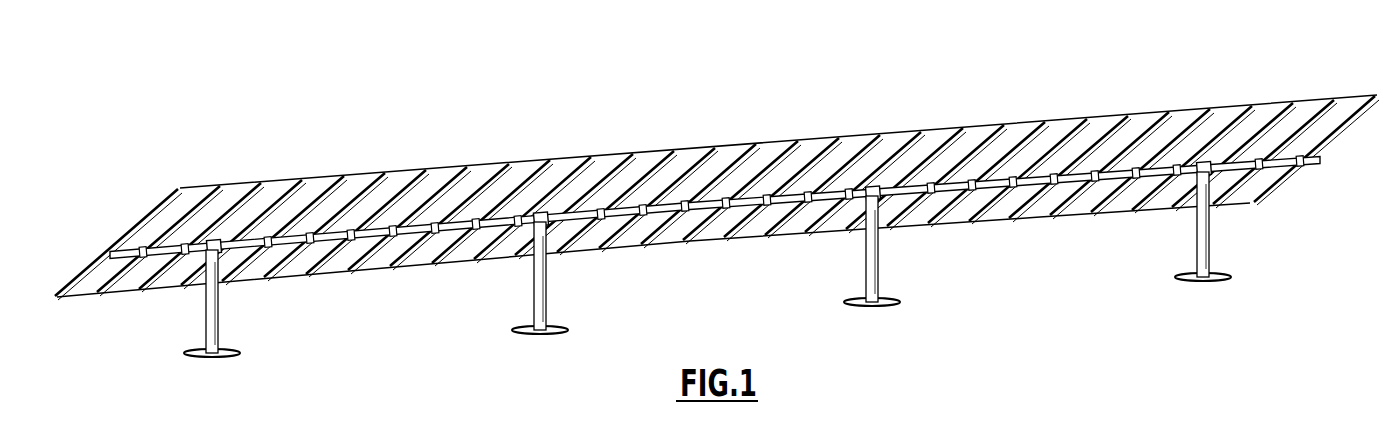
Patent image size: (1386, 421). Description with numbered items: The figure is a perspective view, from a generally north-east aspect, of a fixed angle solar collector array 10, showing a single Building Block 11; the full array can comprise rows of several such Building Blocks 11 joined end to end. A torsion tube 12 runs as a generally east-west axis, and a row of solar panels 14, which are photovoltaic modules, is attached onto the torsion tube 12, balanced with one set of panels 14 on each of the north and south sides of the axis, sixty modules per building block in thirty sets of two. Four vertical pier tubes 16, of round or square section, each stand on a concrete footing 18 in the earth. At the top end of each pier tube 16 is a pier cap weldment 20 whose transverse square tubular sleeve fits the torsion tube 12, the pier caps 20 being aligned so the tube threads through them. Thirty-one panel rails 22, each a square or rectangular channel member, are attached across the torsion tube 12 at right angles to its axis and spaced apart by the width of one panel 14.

The fixed angle solar collector array 10 is at (717, 228).
The Building Block 11 is at (717, 207).
The torsion tube 12 is at (383, 242).
The solar panel 14 is at (187, 198).
The pier tube 16 is at (218, 320).
The concrete footing 18 is at (240, 353).
The pier cap weldment 20 is at (220, 256).
The panel rail 22 is at (175, 196).